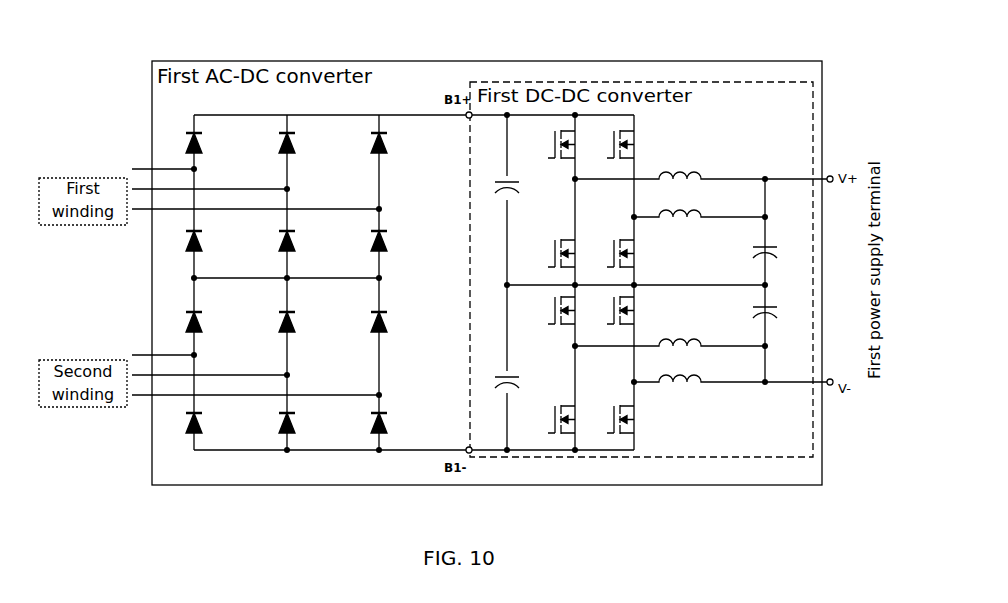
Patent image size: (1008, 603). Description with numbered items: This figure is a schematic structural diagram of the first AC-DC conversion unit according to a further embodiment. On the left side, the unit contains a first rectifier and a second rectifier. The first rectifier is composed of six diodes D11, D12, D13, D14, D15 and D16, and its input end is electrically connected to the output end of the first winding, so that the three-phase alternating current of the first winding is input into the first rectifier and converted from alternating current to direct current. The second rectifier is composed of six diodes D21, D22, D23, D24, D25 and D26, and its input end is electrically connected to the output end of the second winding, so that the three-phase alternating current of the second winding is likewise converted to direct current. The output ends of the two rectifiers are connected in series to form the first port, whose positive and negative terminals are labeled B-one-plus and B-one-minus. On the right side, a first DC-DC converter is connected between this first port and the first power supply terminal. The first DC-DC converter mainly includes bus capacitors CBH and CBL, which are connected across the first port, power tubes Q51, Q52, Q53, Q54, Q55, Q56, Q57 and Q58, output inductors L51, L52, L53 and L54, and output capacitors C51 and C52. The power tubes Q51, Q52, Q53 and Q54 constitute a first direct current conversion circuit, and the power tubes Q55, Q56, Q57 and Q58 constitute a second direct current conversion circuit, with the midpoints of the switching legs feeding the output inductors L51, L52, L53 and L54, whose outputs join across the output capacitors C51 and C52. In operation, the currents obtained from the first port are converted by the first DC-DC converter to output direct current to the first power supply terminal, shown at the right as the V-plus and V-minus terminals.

The diode D11 is at (206, 150).
The diode D12 is at (299, 150).
The diode D13 is at (391, 150).
The diode D14 is at (207, 246).
The diode D15 is at (299, 246).
The diode D16 is at (392, 246).
The diode D21 is at (206, 326).
The diode D22 is at (299, 326).
The diode D23 is at (391, 326).
The diode D24 is at (207, 427).
The diode D25 is at (299, 427).
The diode D26 is at (392, 427).
The bus capacitor CBH is at (514, 175).
The bus capacitor CBL is at (513, 370).
The power tube Q51 is at (576, 144).
The power tube Q52 is at (576, 253).
The power tube Q53 is at (635, 144).
The power tube Q54 is at (635, 253).
The power tube Q55 is at (576, 310).
The power tube Q56 is at (576, 419).
The power tube Q57 is at (635, 310).
The power tube Q58 is at (635, 419).
The output inductor L51 is at (692, 170).
The output inductor L52 is at (692, 208).
The output inductor L53 is at (692, 337).
The output inductor L54 is at (692, 373).
The output capacitor C51 is at (778, 251).
The output capacitor C52 is at (778, 316).